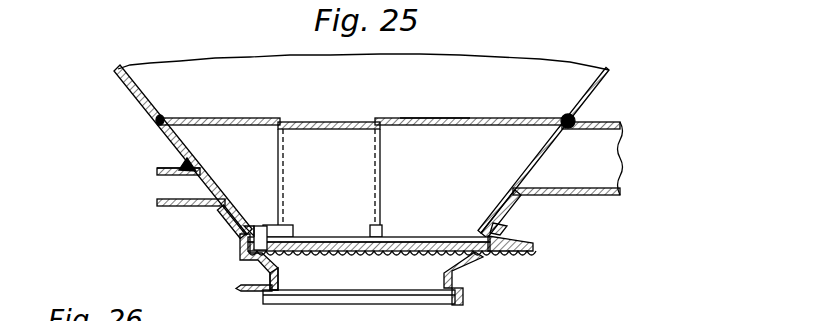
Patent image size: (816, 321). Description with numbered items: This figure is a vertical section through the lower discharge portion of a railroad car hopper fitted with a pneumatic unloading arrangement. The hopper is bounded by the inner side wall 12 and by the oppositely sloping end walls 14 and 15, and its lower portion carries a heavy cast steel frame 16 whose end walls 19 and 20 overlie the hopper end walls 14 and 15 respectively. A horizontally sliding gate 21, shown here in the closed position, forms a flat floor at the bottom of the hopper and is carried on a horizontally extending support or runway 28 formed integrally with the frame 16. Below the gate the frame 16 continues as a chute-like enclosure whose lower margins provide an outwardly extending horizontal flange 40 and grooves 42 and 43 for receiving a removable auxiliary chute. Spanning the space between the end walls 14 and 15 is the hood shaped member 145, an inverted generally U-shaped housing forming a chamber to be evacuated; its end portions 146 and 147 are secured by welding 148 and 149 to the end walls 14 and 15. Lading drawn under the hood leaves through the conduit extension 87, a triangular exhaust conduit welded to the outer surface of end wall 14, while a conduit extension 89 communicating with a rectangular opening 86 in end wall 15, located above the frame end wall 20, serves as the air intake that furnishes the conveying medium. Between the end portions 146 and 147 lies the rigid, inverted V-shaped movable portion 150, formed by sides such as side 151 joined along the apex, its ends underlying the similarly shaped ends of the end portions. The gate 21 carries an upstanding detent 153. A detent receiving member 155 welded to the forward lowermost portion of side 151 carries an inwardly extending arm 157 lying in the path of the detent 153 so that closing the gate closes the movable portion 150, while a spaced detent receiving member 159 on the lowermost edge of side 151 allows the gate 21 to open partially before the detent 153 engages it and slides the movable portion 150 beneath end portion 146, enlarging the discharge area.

The inner side wall 12 is at (502, 62).
The end wall 14 is at (612, 72).
The end wall 15 is at (117, 78).
The frame 16 is at (208, 243).
The end wall 19 is at (502, 213).
The end wall 20 is at (226, 221).
The horizontally sliding gate 21 is at (487, 253).
The support or runway 28 is at (247, 261).
The horizontal flange 40 is at (236, 289).
The groove 42 is at (463, 303).
The groove 43 is at (306, 292).
The rectangular opening 86 is at (158, 190).
The conduit extension 87 is at (630, 121).
The conduit extension 89 is at (142, 155).
The hood shaped member 145 is at (433, 106).
The end portion 146 is at (483, 117).
The end portion 147 is at (223, 117).
The welding 148 is at (566, 115).
The welding 149 is at (162, 117).
The movable portion 150 is at (339, 106).
The side 151 is at (329, 183).
The detent 153 is at (262, 226).
The detent receiving member 155 is at (291, 226).
The arm 157 is at (250, 228).
The detent receiving member 159 is at (382, 226).